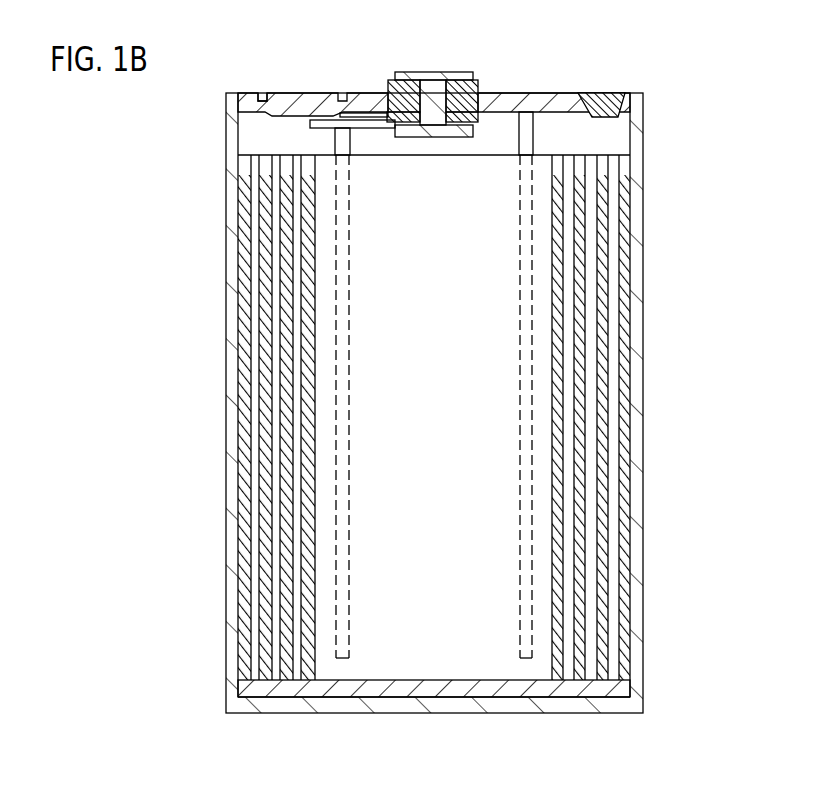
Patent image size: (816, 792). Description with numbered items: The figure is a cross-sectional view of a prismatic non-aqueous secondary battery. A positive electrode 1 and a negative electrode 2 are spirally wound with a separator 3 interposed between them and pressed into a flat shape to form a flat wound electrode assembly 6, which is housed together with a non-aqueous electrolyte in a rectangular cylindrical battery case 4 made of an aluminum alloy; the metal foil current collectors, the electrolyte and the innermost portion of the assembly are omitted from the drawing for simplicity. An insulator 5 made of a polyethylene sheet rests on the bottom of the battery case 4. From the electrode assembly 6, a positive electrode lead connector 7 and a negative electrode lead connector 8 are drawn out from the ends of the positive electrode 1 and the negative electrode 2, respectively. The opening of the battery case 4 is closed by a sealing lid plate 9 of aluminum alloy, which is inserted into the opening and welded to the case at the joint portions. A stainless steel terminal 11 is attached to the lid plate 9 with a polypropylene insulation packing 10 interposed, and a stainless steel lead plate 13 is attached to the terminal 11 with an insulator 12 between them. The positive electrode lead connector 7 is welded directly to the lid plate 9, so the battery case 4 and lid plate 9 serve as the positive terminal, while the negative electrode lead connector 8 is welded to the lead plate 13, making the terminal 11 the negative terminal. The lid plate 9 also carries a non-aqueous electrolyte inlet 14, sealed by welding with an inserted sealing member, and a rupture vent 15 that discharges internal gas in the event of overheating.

The positive electrode 1 is at (247, 357).
The negative electrode 2 is at (268, 440).
The separator 3 is at (258, 398).
The battery case 4 is at (632, 406).
The insulator 5 is at (426, 692).
The flat wound electrode assembly 6 is at (404, 417).
The positive electrode lead connector 7 is at (527, 138).
The negative electrode lead connector 8 is at (334, 142).
The sealing lid plate 9 is at (559, 100).
The insulation packing 10 is at (480, 90).
The terminal 11 is at (432, 80).
The insulator 12 is at (379, 115).
The lead plate 13 is at (362, 122).
The non-aqueous electrolyte inlet 14 is at (606, 96).
The rupture vent 15 is at (323, 94).